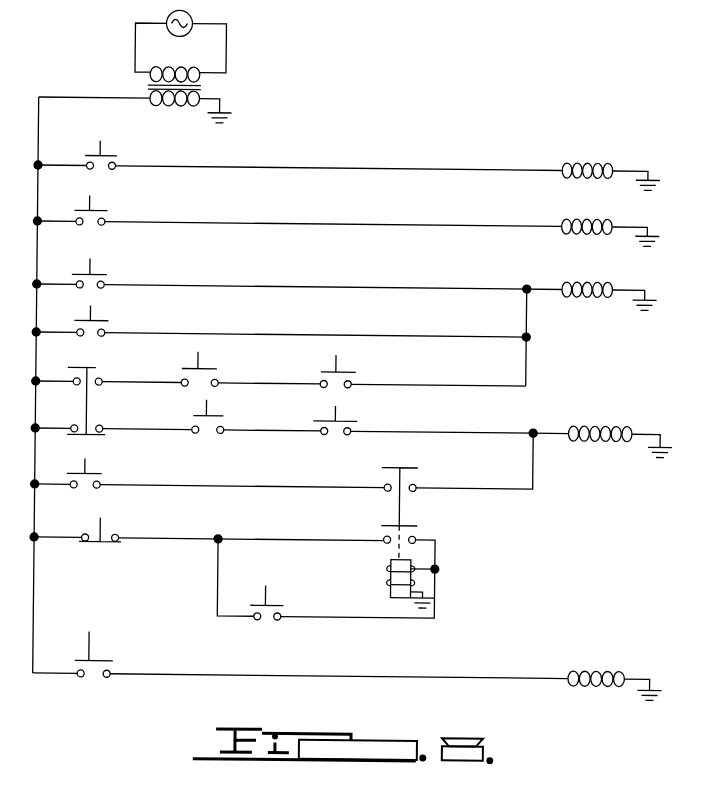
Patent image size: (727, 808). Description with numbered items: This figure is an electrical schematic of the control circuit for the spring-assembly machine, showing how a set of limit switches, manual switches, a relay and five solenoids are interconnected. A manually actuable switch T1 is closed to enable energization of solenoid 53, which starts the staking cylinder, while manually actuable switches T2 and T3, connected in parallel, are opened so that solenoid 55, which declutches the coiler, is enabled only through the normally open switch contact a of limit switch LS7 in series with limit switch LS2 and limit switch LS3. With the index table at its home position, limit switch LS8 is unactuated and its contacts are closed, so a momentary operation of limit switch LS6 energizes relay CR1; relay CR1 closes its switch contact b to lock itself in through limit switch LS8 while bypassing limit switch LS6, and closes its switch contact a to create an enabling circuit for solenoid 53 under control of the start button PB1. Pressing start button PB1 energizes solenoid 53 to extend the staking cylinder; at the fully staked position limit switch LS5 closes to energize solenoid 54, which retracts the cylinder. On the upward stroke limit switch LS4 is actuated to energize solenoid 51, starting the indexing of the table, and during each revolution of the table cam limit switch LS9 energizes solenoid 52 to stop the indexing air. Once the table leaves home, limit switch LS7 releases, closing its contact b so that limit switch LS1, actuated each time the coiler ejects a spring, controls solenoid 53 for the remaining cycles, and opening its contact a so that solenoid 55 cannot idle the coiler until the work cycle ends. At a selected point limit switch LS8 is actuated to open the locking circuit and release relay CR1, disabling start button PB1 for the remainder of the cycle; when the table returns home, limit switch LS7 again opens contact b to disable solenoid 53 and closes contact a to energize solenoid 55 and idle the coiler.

The limit switch LS4 is at (108, 155).
The limit switch LS9 is at (98, 210).
The manually actuable switch T3 is at (100, 274).
The manually actuable switch T2 is at (100, 320).
The limit switch LS7 is at (89, 398).
The switch contact a is at (268, 406).
The switch contact b is at (266, 467).
The limit switch LS3 is at (200, 355).
The limit switch LS2 is at (338, 365).
The limit switch LS1 is at (209, 404).
The manually actuable switch T1 is at (338, 410).
The start button PB1 is at (88, 462).
The limit switch LS8 is at (104, 522).
The limit switch LS6 is at (270, 595).
The relay CR1 is at (436, 538).
The limit switch LS5 is at (94, 642).
The solenoid 51 is at (609, 150).
The solenoid 52 is at (600, 207).
The solenoid 53 is at (613, 408).
The solenoid 54 is at (627, 644).
The solenoid 55 is at (607, 278).